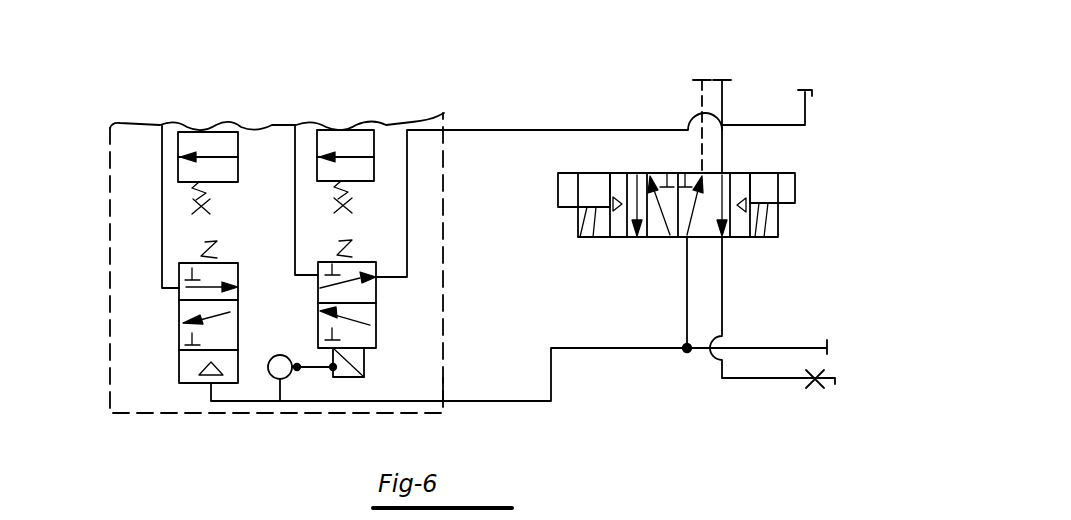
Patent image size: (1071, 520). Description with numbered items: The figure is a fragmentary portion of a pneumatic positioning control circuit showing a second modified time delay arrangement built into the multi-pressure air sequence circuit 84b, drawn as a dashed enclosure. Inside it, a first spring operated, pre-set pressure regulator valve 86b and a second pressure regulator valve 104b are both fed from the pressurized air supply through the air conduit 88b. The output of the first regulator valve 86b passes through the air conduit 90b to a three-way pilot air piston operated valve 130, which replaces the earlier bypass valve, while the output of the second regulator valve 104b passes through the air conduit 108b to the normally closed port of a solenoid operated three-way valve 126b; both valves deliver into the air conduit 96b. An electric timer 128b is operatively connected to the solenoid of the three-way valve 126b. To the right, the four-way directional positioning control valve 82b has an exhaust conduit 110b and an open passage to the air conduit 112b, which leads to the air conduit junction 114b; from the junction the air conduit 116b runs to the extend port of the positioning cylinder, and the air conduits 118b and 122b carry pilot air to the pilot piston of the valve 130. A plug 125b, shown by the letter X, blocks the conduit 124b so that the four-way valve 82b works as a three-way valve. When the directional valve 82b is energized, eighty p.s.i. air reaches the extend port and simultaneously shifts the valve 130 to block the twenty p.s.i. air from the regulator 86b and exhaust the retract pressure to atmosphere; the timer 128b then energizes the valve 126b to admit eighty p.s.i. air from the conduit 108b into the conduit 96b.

The four-way directional positioning control valve 82b is at (614, 243).
The multi-pressure air sequence circuit 84b is at (446, 280).
The first pressure regulator valve 86b is at (246, 192).
The air conduit 88b is at (722, 98).
The air conduit 90b is at (162, 266).
The air conduit 96b is at (592, 130).
The second pressure regulator valve 104b is at (383, 190).
The air conduit 108b is at (296, 268).
The exhaust air conduit 110b is at (702, 100).
The air conduit 112b is at (687, 330).
The air conduit junction 114b is at (687, 352).
The air conduit 116b is at (742, 348).
The air conduit 118b is at (640, 350).
The air conduit 122b is at (551, 382).
The conduit 124b is at (722, 268).
The plug 125b is at (852, 382).
The solenoid operated three-way valve 126b is at (380, 317).
The electric timer 128b is at (278, 405).
The three-way pilot air piston operated valve 130 is at (166, 370).